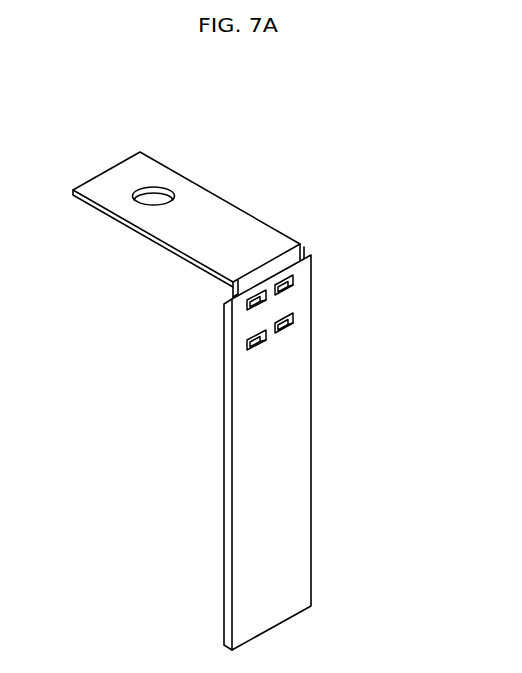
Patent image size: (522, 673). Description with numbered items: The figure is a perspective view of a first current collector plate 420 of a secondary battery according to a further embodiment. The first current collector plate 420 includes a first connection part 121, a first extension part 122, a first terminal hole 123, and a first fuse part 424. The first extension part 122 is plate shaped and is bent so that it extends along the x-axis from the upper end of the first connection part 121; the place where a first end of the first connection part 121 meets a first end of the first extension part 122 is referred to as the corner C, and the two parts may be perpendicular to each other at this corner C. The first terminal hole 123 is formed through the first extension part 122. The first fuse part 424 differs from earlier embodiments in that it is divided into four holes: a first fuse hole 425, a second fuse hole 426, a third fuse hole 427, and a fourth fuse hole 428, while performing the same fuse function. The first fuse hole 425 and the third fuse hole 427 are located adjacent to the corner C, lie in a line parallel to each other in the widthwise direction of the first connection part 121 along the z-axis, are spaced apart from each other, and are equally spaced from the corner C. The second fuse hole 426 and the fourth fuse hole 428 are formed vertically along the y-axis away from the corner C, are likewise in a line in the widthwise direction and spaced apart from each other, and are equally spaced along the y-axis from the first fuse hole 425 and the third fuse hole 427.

The first current collector plate 420 is at (70, 84).
The first connection part 121 is at (300, 487).
The first extension part 122 is at (220, 212).
The first terminal hole 123 is at (157, 187).
The first fuse part 424 is at (352, 322).
The first fuse hole 425 is at (258, 309).
The second fuse hole 426 is at (318, 354).
The third fuse hole 427 is at (292, 281).
The fourth fuse hole 428 is at (290, 322).
The corner C is at (272, 262).